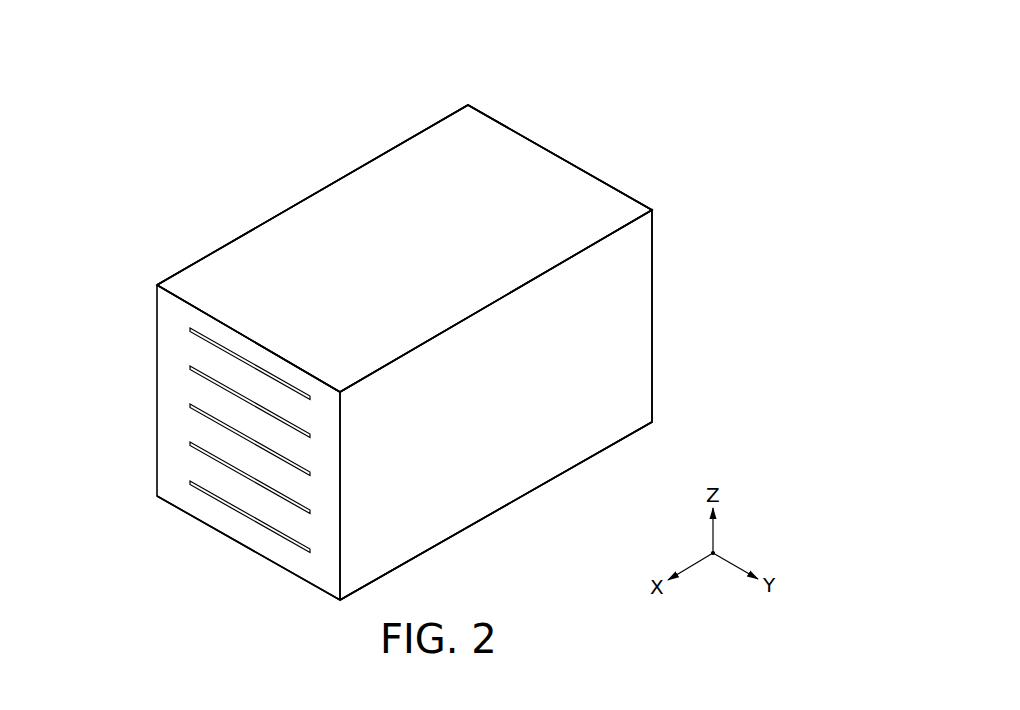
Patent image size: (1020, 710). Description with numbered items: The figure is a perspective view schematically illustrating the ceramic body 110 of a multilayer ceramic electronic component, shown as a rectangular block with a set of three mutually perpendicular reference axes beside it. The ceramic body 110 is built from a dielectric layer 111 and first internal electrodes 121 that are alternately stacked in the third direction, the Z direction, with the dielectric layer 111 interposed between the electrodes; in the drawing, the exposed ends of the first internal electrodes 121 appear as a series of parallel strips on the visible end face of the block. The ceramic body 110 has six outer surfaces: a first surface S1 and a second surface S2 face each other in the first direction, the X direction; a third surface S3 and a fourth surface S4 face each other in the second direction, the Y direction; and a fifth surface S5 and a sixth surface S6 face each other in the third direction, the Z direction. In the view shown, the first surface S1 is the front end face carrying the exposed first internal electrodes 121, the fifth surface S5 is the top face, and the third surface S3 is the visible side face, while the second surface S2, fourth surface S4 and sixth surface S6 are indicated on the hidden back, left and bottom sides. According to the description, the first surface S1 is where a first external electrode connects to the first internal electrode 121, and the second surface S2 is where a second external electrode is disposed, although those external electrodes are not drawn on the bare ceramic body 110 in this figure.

The ceramic body 110 is at (244, 56).
The dielectric layer 111 is at (171, 415).
The first internal electrode 121 is at (195, 384).
The first surface S1 is at (237, 490).
The second surface S2 is at (557, 188).
The third surface S3 is at (580, 416).
The fourth surface S4 is at (267, 253).
The fifth surface S5 is at (435, 165).
The sixth surface S6 is at (465, 495).